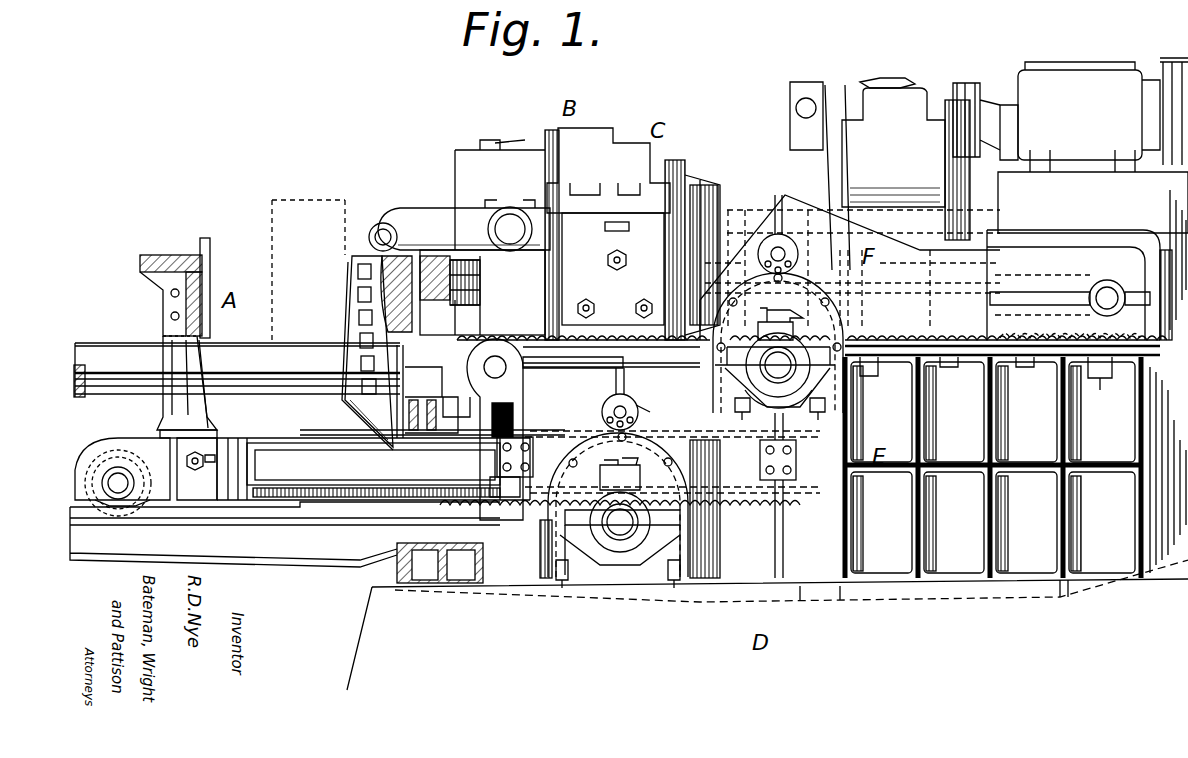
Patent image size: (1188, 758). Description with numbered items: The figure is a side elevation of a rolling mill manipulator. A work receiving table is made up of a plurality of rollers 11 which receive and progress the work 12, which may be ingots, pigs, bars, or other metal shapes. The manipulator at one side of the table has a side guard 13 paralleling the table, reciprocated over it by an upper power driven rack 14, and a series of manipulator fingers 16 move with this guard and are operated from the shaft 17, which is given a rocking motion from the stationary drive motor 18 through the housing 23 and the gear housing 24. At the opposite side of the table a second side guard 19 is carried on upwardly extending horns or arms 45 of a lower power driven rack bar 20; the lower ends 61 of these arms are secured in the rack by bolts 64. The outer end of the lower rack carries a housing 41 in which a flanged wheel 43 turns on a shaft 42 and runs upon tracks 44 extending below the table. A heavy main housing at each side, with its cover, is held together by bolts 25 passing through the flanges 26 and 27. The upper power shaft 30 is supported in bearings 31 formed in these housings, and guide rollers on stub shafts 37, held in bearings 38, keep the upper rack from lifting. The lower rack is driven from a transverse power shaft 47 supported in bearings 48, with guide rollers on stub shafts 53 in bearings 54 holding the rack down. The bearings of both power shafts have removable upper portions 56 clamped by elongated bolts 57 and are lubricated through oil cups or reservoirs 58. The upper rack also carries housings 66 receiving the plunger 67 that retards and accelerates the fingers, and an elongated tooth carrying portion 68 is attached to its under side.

The rollers 11 is at (232, 352).
The work 12 is at (272, 240).
The side guard 13 is at (380, 262).
The power driven rack 14 is at (562, 305).
The manipulator fingers 16 is at (360, 378).
The shaft 17 is at (510, 224).
The drive motor 18 is at (1070, 145).
The second side guard 19 is at (163, 255).
The power driven rack bar 20 is at (373, 469).
The housing 23 is at (478, 175).
The gear housing 24 is at (880, 174).
The bolts 25 is at (1102, 392).
The flange 26 is at (890, 356).
The flange 27 is at (905, 346).
The upper power shaft 30 is at (770, 376).
The bearings 31 is at (745, 363).
The stub shafts 37 is at (790, 258).
The bearings 38 is at (766, 245).
The housing 41 is at (115, 466).
The shaft 42 is at (150, 500).
The flanged wheel 43 is at (116, 500).
The tracks 44 is at (233, 537).
The horns or arms 45 is at (183, 385).
The transverse power shaft 47 is at (620, 527).
The bearings 48 is at (555, 560).
The stub shafts 53 is at (614, 407).
The bearings 54 is at (646, 410).
The upper portions of bearings 56 is at (590, 525).
The elongated bolts 57 is at (742, 410).
The oil cups or reservoirs 58 is at (618, 478).
The lower ends 61 is at (197, 469).
The bolts 64 is at (210, 457).
The housings 66 is at (436, 277).
The plunger 67 is at (443, 247).
The tooth carrying portion 68 is at (470, 338).